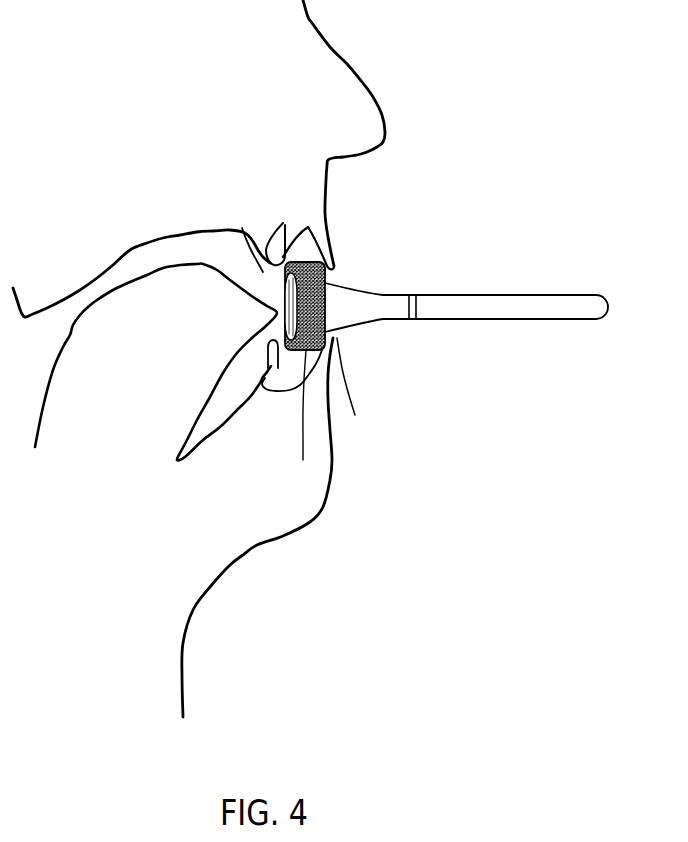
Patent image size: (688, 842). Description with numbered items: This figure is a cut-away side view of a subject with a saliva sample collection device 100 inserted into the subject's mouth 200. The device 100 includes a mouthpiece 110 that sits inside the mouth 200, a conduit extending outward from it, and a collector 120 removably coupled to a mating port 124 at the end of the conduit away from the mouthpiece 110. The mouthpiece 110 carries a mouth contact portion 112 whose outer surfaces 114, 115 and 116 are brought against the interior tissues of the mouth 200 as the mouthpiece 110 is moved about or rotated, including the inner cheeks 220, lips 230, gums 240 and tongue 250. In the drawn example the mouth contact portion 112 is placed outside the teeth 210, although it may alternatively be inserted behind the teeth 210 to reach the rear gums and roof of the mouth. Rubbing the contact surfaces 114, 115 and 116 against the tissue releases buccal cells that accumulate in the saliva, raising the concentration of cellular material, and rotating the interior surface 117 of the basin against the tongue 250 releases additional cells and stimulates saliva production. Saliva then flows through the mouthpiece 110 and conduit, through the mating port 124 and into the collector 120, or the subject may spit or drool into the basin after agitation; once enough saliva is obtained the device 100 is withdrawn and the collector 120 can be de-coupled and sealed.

The saliva sample collection device 100 is at (412, 270).
The mouthpiece 110 is at (392, 335).
The mouth contact portion 112 is at (314, 264).
The outer surface 114 is at (367, 394).
The outer surface 115 is at (303, 460).
The outer surface 116 is at (285, 336).
The interior surface 117 is at (242, 228).
The collector 120 is at (543, 292).
The mating port 124 is at (415, 318).
The mouth 200 is at (229, 259).
The teeth 210 is at (267, 358).
The inner cheeks 220 is at (308, 374).
The lips 230 is at (349, 254).
The gums 240 is at (266, 243).
The tongue 250 is at (206, 333).